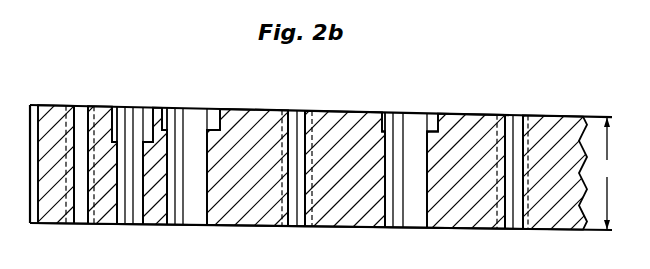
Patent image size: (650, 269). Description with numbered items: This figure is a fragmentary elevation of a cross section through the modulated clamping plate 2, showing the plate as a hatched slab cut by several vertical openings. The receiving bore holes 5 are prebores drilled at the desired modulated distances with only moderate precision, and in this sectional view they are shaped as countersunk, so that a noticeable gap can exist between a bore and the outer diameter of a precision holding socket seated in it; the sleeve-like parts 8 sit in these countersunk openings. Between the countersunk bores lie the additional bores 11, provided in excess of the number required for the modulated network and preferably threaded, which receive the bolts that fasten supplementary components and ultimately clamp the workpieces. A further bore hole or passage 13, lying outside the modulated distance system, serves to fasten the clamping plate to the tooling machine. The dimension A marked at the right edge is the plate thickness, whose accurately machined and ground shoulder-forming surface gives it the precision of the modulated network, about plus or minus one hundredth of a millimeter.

The modulated clamping plate 2 is at (449, 110).
The receiving bore hole 5 is at (205, 207).
The bushing 8 is at (213, 124).
The additional bore 11 is at (80, 106).
The supplementary bore hole 13 is at (134, 138).
The dimension A is at (603, 174).